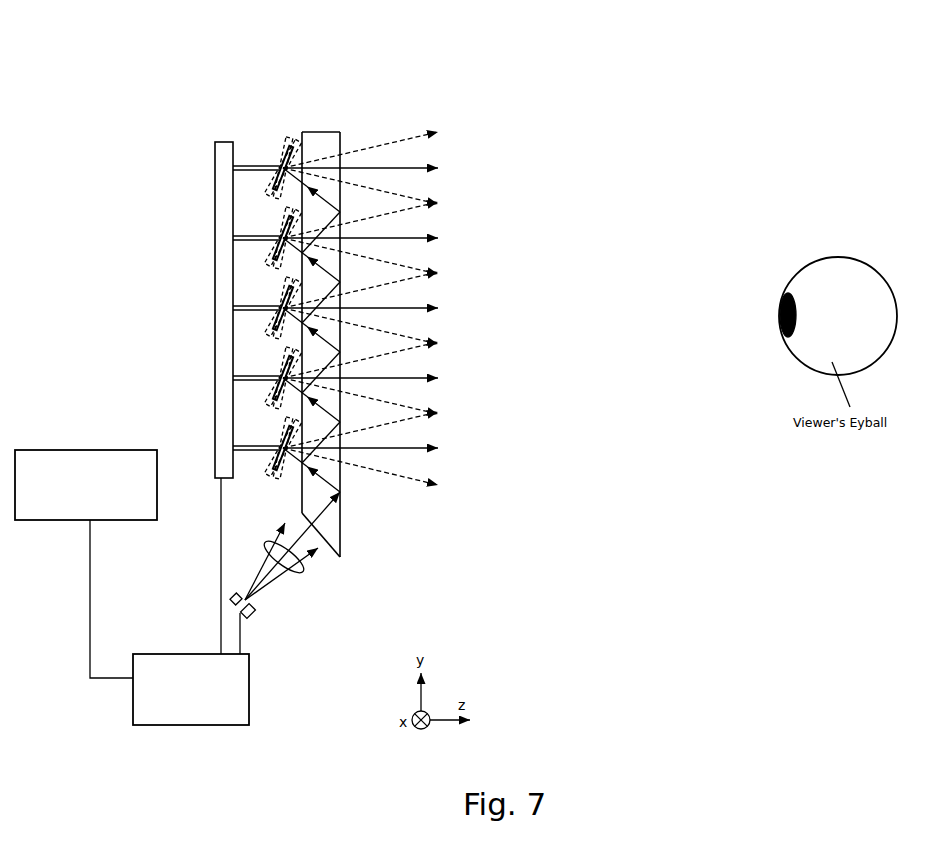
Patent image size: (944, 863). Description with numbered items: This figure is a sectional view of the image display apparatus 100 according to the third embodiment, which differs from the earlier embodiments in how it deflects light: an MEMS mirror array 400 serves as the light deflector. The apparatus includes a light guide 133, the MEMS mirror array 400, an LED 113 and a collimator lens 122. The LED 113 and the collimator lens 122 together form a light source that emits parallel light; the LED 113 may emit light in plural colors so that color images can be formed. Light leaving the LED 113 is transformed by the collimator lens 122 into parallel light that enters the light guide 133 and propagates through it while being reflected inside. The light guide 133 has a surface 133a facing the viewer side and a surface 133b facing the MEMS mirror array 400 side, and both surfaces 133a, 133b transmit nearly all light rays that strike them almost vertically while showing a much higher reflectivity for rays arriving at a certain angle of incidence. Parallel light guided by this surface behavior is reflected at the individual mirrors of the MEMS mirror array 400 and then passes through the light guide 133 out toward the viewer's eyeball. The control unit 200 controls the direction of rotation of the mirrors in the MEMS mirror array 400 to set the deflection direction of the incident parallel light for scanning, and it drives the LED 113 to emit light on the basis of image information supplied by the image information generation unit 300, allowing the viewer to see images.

The image display apparatus 100 is at (245, 107).
The MEMS mirror array 400 is at (279, 127).
The light guide 133 is at (320, 138).
The surface of the light guide facing the viewer side 133a is at (340, 485).
The surface of the light guide facing the MEMS mirror array side 133b is at (301, 493).
The collimator lens 122 is at (300, 573).
The LED 113 is at (250, 612).
The control unit 200 is at (194, 701).
The image information generation unit 300 is at (86, 564).